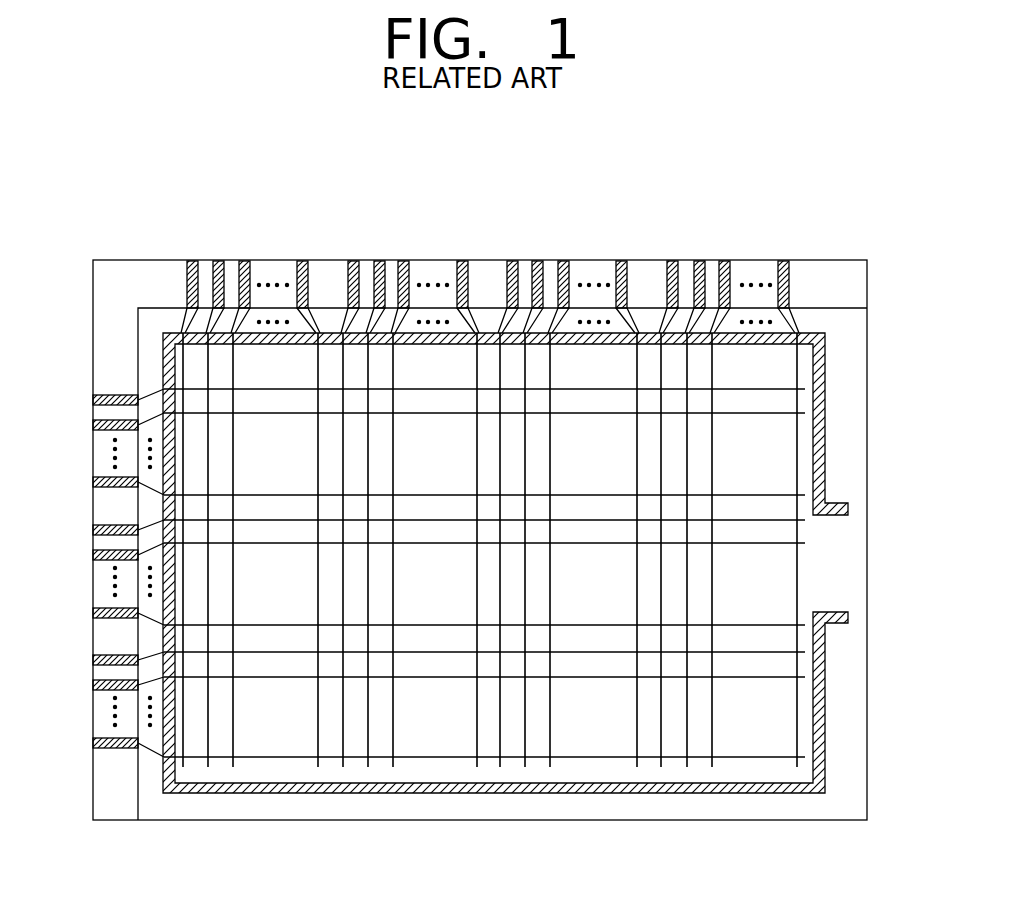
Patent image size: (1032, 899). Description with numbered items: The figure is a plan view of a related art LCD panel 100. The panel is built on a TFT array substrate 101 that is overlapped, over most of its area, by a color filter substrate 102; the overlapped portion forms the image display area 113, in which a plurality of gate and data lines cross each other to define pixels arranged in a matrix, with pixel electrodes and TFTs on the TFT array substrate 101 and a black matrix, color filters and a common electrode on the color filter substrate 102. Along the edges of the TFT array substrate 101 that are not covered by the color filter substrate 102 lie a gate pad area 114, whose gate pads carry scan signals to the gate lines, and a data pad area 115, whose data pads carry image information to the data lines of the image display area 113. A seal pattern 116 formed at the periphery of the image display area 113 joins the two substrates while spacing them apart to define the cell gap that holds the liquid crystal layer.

The LCD panel 100 is at (120, 242).
The TFT array substrate 101 is at (853, 289).
The color filter substrate 102 is at (853, 352).
The image display area 113 is at (455, 464).
The gate pad area 114 is at (84, 394).
The data pad area 115 is at (790, 250).
The seal pattern 116 is at (822, 428).